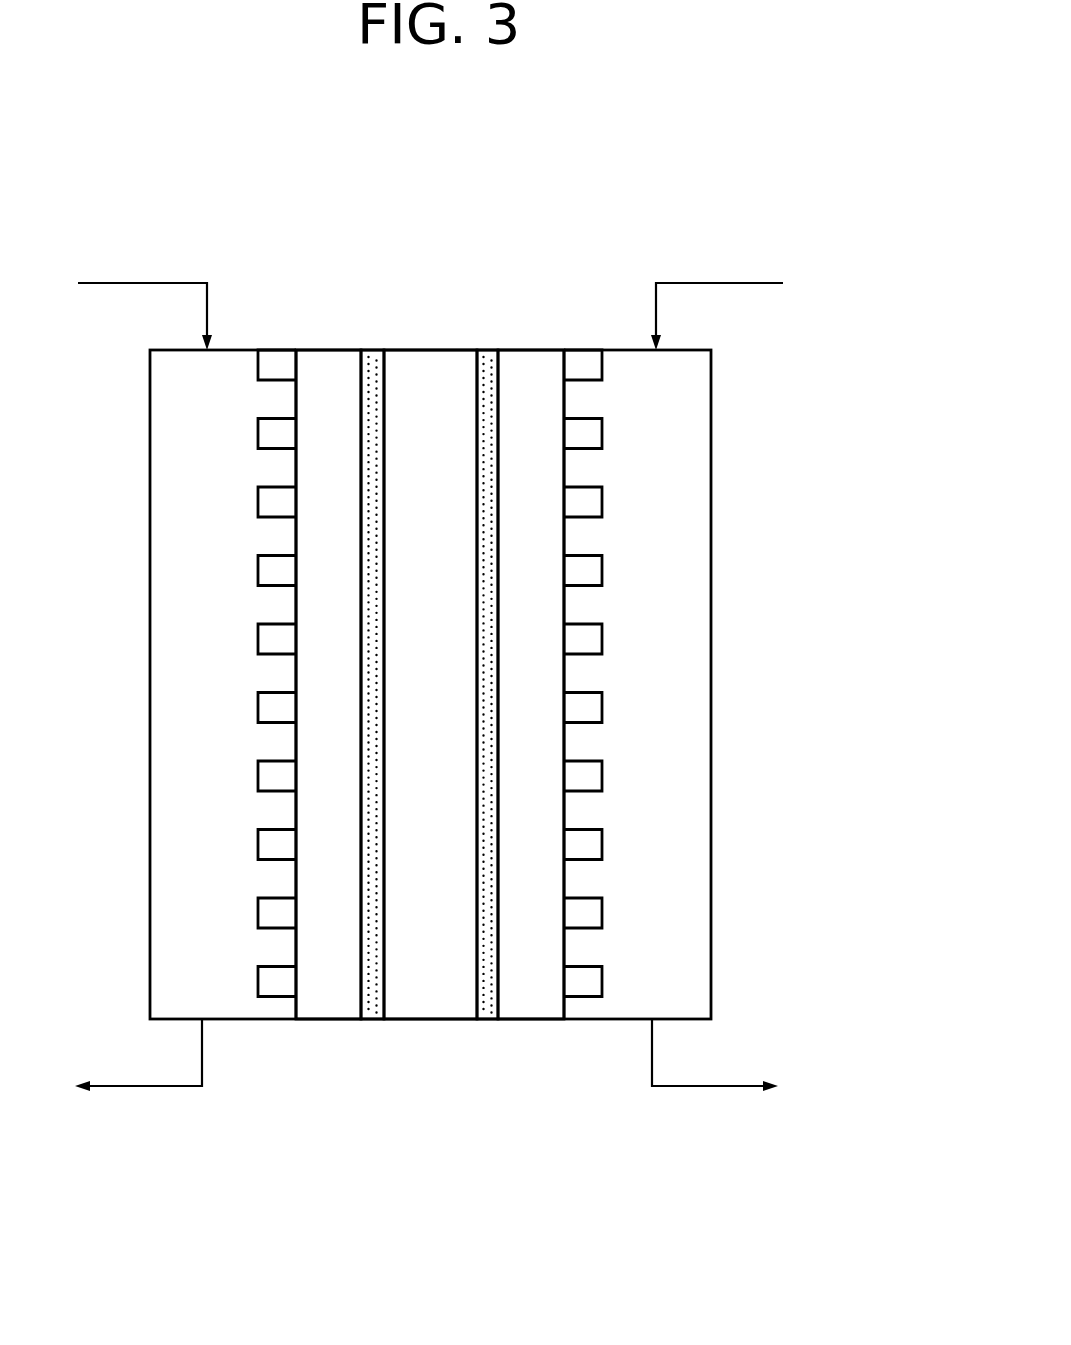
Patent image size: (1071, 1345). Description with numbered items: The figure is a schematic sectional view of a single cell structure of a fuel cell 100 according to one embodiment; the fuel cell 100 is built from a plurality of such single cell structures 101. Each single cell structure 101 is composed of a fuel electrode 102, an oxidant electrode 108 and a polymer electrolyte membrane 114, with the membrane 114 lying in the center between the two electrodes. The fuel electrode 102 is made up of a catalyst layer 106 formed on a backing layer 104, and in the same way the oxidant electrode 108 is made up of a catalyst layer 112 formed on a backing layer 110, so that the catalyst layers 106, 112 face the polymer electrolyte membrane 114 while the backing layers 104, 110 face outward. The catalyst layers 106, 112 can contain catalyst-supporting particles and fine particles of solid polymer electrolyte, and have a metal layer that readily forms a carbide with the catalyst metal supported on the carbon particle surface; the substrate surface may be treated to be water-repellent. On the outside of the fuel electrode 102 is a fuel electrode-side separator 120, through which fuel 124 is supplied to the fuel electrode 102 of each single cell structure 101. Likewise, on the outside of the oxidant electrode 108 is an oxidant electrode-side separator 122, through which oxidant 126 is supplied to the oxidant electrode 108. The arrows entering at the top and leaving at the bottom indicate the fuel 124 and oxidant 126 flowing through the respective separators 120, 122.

The fuel cell 100 is at (822, 1315).
The single cell structure 101 is at (575, 210).
The fuel electrode 102 is at (380, 343).
The backing layer 104 is at (327, 1008).
The catalyst layer 106 is at (370, 1010).
The oxidant electrode 108 is at (560, 343).
The backing layer 110 is at (527, 1008).
The catalyst layer 112 is at (482, 1010).
The polymer electrolyte membrane 114 is at (432, 372).
The fuel electrode-side separator 120 is at (165, 683).
The oxidant electrode-side separator 122 is at (695, 683).
The fuel 124 is at (145, 299).
The oxidant 126 is at (717, 298).